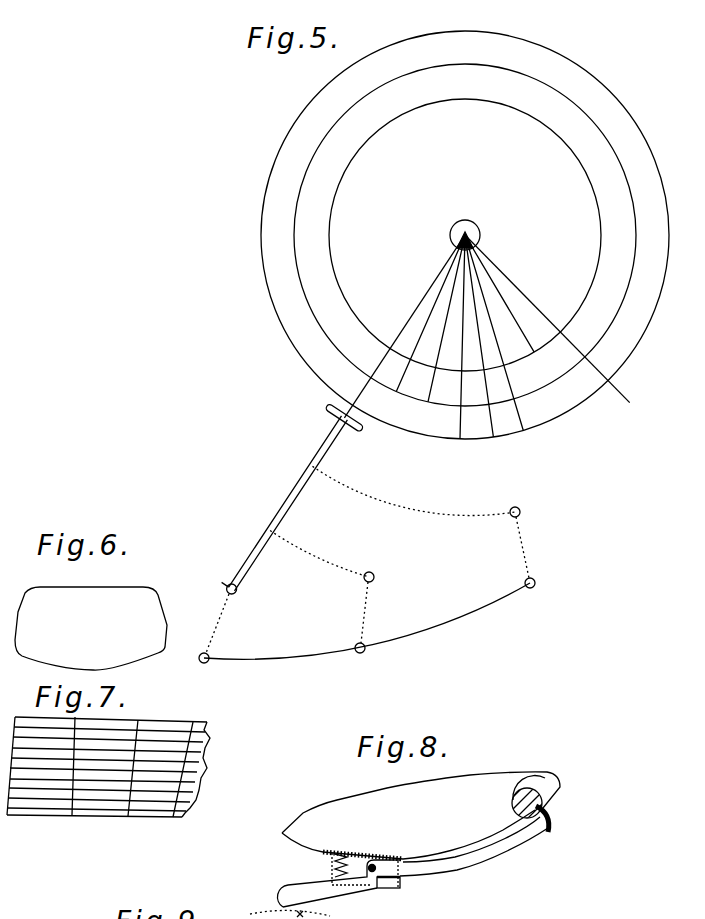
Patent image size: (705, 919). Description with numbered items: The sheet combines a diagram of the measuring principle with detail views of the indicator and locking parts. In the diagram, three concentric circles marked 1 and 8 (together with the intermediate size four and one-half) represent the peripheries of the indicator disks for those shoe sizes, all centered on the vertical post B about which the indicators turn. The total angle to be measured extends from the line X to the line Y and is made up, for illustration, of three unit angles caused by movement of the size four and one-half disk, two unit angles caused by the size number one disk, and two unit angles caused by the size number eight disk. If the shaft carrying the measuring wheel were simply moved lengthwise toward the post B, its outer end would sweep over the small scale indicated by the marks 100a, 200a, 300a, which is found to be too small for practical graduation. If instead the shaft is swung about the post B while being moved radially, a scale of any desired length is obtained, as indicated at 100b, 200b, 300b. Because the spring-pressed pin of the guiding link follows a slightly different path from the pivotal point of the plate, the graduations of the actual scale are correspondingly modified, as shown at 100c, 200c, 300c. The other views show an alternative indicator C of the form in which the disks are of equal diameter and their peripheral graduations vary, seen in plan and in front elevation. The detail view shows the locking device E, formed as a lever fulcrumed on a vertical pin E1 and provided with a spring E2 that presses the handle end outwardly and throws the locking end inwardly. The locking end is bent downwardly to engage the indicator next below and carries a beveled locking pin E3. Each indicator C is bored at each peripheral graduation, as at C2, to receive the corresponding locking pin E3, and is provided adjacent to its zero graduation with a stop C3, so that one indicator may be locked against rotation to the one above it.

In FIG. 5, the circle representing size No. 1 indicator disk periphery 1 is at (646, 328).
In FIG. 5, the circle representing size No. 8 indicator disk periphery 8 is at (582, 305).
In FIG. 5, the vertical post B is at (470, 220).
In FIG. 5, the line X is at (400, 325).
In FIG. 5, the line Y is at (618, 388).
In FIG. 5, the scale mark 100a is at (312, 466).
In FIG. 5, the scale mark 200a is at (270, 530).
In FIG. 5, the scale mark 300a is at (210, 568).
In FIG. 5, the scale mark 100b is at (519, 515).
In FIG. 5, the scale mark 200b is at (371, 581).
In FIG. 5, the scale mark 300b is at (234, 593).
In FIG. 5, the scale graduation 100c is at (542, 592).
In FIG. 5, the scale graduation 200c is at (367, 658).
In FIG. 5, the scale graduation 300c is at (207, 669).
In FIG. 8, the indicator C is at (421, 794).
In FIG. 8, the bore at peripheral graduation C2 is at (520, 783).
In FIG. 8, the stop C3 is at (517, 832).
In FIG. 8, the locking device E is at (452, 860).
In FIG. 8, the vertical pin E1 is at (403, 878).
In FIG. 8, the spring E2 is at (330, 860).
In FIG. 8, the locking pin E3 is at (540, 805).